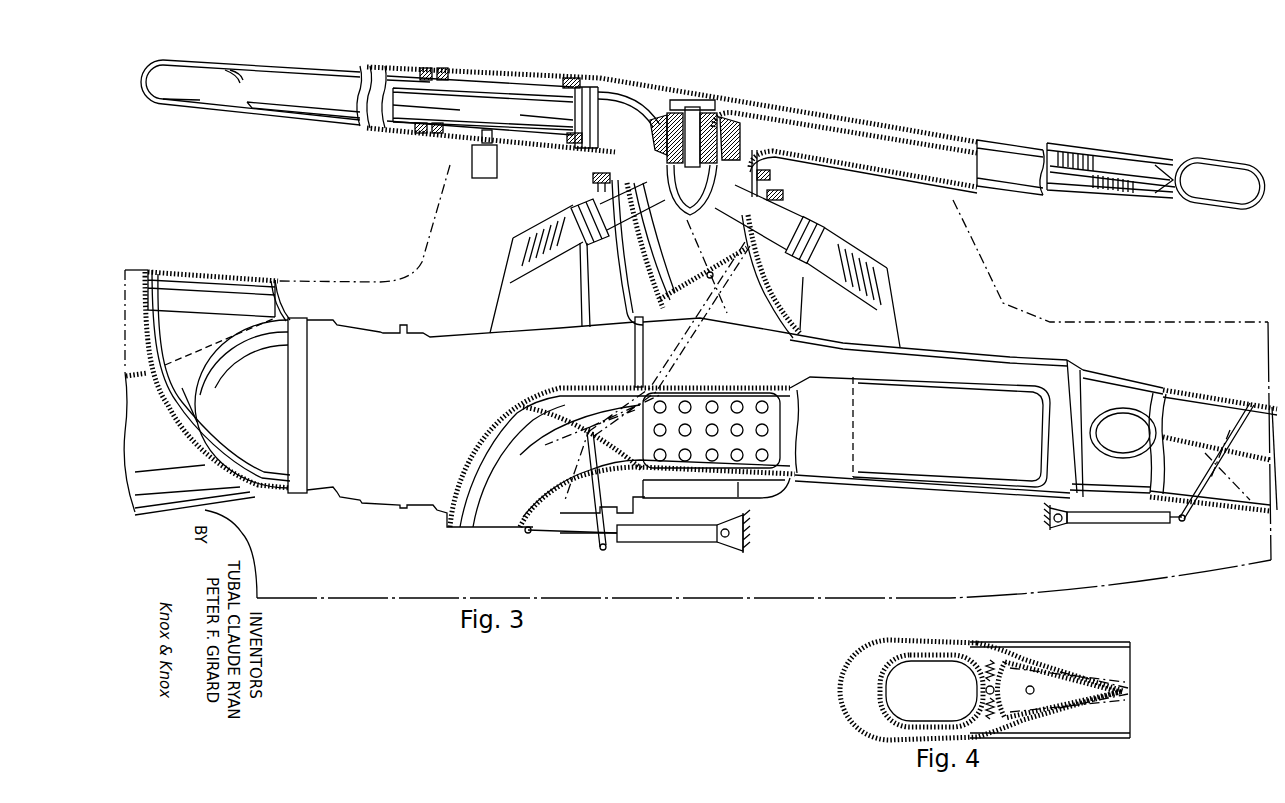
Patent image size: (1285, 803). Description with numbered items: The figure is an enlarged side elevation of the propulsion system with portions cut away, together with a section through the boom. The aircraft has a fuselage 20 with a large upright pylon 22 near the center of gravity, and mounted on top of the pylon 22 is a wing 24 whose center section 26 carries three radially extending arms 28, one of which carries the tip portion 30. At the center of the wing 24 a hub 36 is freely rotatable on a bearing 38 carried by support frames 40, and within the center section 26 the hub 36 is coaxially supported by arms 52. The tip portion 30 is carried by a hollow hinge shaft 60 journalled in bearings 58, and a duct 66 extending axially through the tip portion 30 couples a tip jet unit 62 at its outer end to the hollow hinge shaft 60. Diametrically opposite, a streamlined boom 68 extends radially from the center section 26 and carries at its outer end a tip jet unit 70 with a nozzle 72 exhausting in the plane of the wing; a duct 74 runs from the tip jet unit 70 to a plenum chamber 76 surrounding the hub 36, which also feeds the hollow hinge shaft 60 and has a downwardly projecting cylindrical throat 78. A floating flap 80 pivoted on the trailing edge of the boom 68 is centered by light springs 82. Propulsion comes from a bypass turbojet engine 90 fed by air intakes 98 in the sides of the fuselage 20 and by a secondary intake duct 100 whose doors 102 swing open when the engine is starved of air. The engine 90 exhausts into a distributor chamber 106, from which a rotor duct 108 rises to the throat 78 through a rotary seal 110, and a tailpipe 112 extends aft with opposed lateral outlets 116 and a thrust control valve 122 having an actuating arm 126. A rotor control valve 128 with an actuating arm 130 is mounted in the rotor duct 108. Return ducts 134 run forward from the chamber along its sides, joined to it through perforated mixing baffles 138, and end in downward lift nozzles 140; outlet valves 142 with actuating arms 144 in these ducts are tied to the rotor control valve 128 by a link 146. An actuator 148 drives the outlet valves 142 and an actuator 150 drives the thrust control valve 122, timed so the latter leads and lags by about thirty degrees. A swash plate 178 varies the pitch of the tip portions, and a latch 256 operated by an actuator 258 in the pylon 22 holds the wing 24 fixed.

In FIG. 3, the fuselage 20 is at (1212, 320).
In FIG. 3, the pylon 22 is at (443, 202).
In FIG. 3, the wing 24 is at (888, 112).
In FIG. 3, the center section 26 is at (780, 103).
In FIG. 3, the arms 28 is at (470, 64).
In FIG. 3, the tip portion 30 is at (320, 115).
In FIG. 3, the hub 36 is at (715, 120).
In FIG. 3, the bearing 38 is at (690, 107).
In FIG. 3, the support frames 40 is at (585, 204).
In FIG. 3, the arms 52 is at (652, 128).
In FIG. 3, the bearings 58 is at (436, 68).
In FIG. 3, the hollow hinge shaft 60 is at (505, 85).
In FIG. 3, the tip jet unit 62 is at (198, 68).
In FIG. 3, the duct 66 is at (397, 72).
In FIG. 3, the boom 68 is at (1072, 152).
In FIG. 4, the boom 68 is at (848, 672).
In FIG. 3, the tip jet unit 70 is at (1225, 163).
In FIG. 4, the tip jet unit 70 is at (1080, 645).
In FIG. 3, the nozzle 72 is at (1234, 200).
In FIG. 3, the duct 74 is at (940, 150).
In FIG. 4, the duct 74 is at (886, 688).
In FIG. 3, the plenum chamber 76 is at (638, 95).
In FIG. 3, the throat 78 is at (762, 170).
In FIG. 3, the floating flap 80 is at (1075, 183).
In FIG. 4, the floating flap 80 is at (1100, 690).
In FIG. 4, the springs 82 is at (987, 700).
In FIG. 3, the turbojet engine 90 is at (470, 333).
In FIG. 3, the air intakes 98 is at (228, 502).
In FIG. 3, the secondary intake duct 100 is at (285, 292).
In FIG. 3, the doors 102 is at (257, 270).
In FIG. 3, the distributor chamber 106 is at (645, 349).
In FIG. 3, the rotor duct 108 is at (642, 287).
In FIG. 3, the rotary seal 110 is at (772, 186).
In FIG. 3, the tailpipe 112 is at (1200, 388).
In FIG. 3, the lateral outlets 116 is at (1117, 412).
In FIG. 3, the thrust control valve 122 is at (1190, 443).
In FIG. 3, the actuating arm 126 is at (1190, 520).
In FIG. 3, the rotor control valve 128 is at (703, 278).
In FIG. 3, the actuating arm 130 is at (712, 283).
In FIG. 3, the return ducts 134 is at (935, 385).
In FIG. 3, the perforated mixing baffles 138 is at (728, 400).
In FIG. 3, the lift nozzles 140 is at (447, 523).
In FIG. 3, the outlet valves 142 is at (560, 410).
In FIG. 3, the actuating arms 144 is at (540, 533).
In FIG. 3, the link 146 is at (680, 360).
In FIG. 3, the actuator 148 is at (645, 542).
In FIG. 3, the actuator 150 is at (1102, 525).
In FIG. 3, the swash plate 178 is at (590, 178).
In FIG. 3, the latch 256 is at (488, 130).
In FIG. 3, the actuator 258 is at (472, 156).